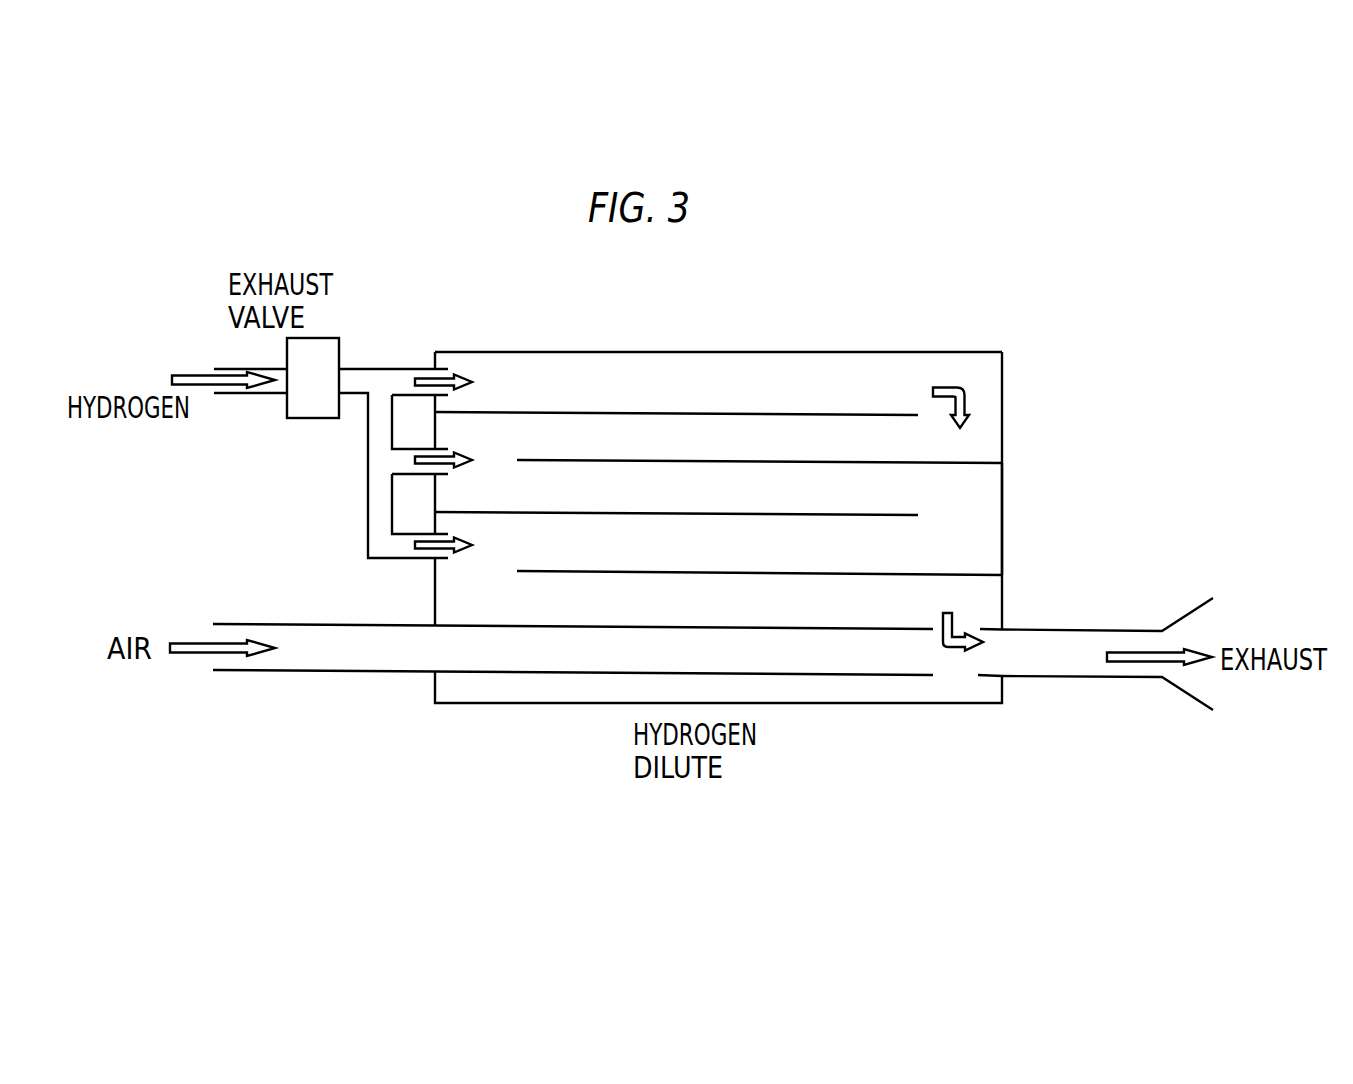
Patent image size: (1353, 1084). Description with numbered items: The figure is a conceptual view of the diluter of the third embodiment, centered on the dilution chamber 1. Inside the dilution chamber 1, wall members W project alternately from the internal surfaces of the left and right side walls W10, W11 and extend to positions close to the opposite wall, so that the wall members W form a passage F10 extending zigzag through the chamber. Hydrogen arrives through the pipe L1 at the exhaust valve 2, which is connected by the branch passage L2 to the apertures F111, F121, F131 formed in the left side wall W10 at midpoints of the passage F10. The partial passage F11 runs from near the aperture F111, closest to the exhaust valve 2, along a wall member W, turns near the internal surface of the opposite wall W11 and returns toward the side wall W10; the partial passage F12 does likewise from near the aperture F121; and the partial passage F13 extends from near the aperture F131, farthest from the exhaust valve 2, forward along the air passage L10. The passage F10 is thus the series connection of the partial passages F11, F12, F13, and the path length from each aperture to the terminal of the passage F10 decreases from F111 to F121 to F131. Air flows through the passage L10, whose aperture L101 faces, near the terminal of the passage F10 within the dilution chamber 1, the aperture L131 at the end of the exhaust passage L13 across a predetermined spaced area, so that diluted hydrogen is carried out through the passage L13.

The dilution chamber 1 is at (1002, 420).
The exhaust valve 2 is at (342, 355).
The hydrogen exhaust pipe L1 is at (270, 393).
The branch passage L2 is at (368, 497).
The passage L10 is at (287, 670).
The passage for exhausting L13 is at (1067, 677).
The aperture of the passage L10 L101 is at (935, 657).
The aperture of the end portion of the passage L13 L131 is at (978, 657).
The passage F10 is at (550, 367).
The passage F11 is at (807, 383).
The passage F12 is at (963, 502).
The passage F13 is at (458, 604).
The aperture F111 is at (455, 373).
The aperture F121 is at (402, 462).
The aperture F131 is at (485, 547).
The wall members W is at (723, 413).
The left side wall W10 is at (435, 432).
The right side wall W11 is at (1002, 558).